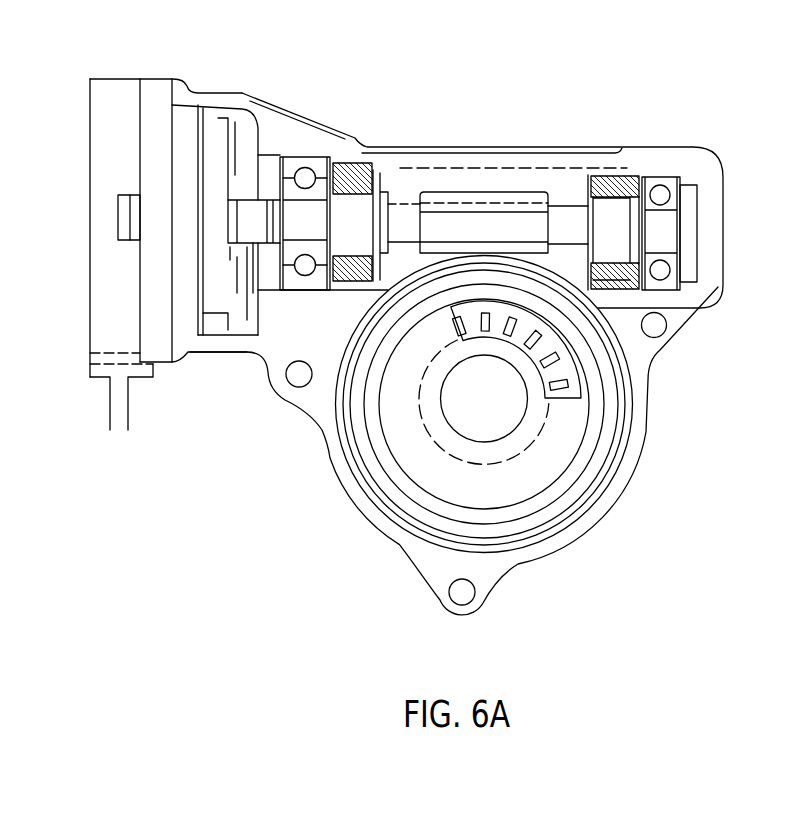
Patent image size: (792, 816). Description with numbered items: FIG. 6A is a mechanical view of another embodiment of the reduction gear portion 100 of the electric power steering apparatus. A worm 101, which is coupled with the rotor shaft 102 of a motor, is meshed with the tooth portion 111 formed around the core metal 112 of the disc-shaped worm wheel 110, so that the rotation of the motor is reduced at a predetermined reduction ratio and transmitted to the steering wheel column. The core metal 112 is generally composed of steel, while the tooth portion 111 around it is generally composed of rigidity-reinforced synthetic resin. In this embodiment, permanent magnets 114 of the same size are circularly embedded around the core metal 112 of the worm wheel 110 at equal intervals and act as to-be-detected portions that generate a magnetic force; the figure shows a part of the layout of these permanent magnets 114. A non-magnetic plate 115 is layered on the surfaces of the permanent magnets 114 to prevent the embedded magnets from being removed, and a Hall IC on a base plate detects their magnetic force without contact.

The reduction gear portion 100 is at (717, 130).
The worm 101 is at (510, 192).
The rotor shaft 102 is at (257, 225).
The worm wheel 110 is at (652, 365).
The tooth portion 111 is at (627, 425).
The core metal 112 is at (518, 490).
The permanent magnets 114 is at (562, 394).
The non-magnetic plate 115 is at (557, 333).